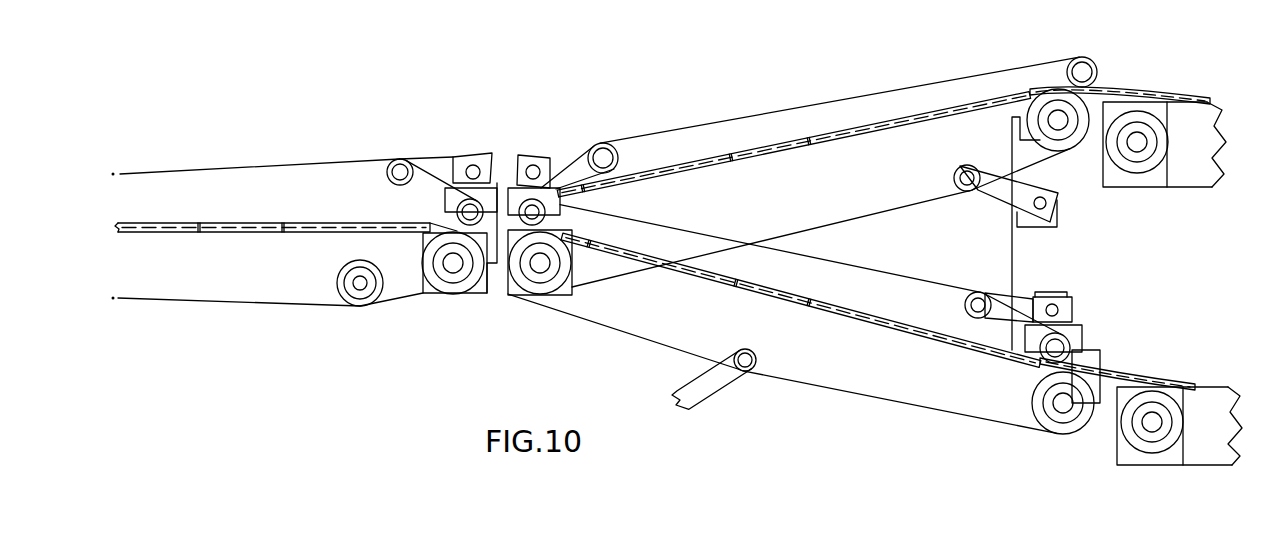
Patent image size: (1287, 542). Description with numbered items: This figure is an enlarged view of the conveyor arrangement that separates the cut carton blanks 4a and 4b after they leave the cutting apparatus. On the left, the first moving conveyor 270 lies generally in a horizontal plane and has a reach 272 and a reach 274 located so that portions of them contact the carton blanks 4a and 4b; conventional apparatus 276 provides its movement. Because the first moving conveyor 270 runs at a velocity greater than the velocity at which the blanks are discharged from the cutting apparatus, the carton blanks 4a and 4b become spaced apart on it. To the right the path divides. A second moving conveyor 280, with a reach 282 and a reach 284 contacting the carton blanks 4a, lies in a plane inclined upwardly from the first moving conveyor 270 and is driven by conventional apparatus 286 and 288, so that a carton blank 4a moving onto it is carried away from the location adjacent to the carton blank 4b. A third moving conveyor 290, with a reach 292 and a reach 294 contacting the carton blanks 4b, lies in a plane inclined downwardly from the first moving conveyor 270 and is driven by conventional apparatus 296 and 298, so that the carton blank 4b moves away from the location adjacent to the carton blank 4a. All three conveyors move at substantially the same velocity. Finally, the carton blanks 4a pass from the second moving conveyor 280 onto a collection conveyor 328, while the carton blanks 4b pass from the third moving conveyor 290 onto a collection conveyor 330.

The first moving conveyor 270 is at (238, 152).
The reach 272 is at (221, 222).
The reach 274 is at (228, 236).
The conventional apparatus 276 is at (430, 141).
The second moving conveyor 280 is at (780, 95).
The reach 282 is at (753, 172).
The reach 284 is at (795, 147).
The conventional apparatus 286 is at (556, 142).
The conventional apparatus 288 is at (1070, 180).
The third moving conveyor 290 is at (857, 407).
The reach 292 is at (786, 291).
The reach 294 is at (786, 296).
The conventional apparatus 296 is at (522, 306).
The conventional apparatus 298 is at (1040, 442).
The collection conveyor 328 is at (1213, 110).
The collection conveyor 330 is at (1210, 407).
The carton blank 4a is at (664, 168).
The carton blank 4b is at (146, 222).